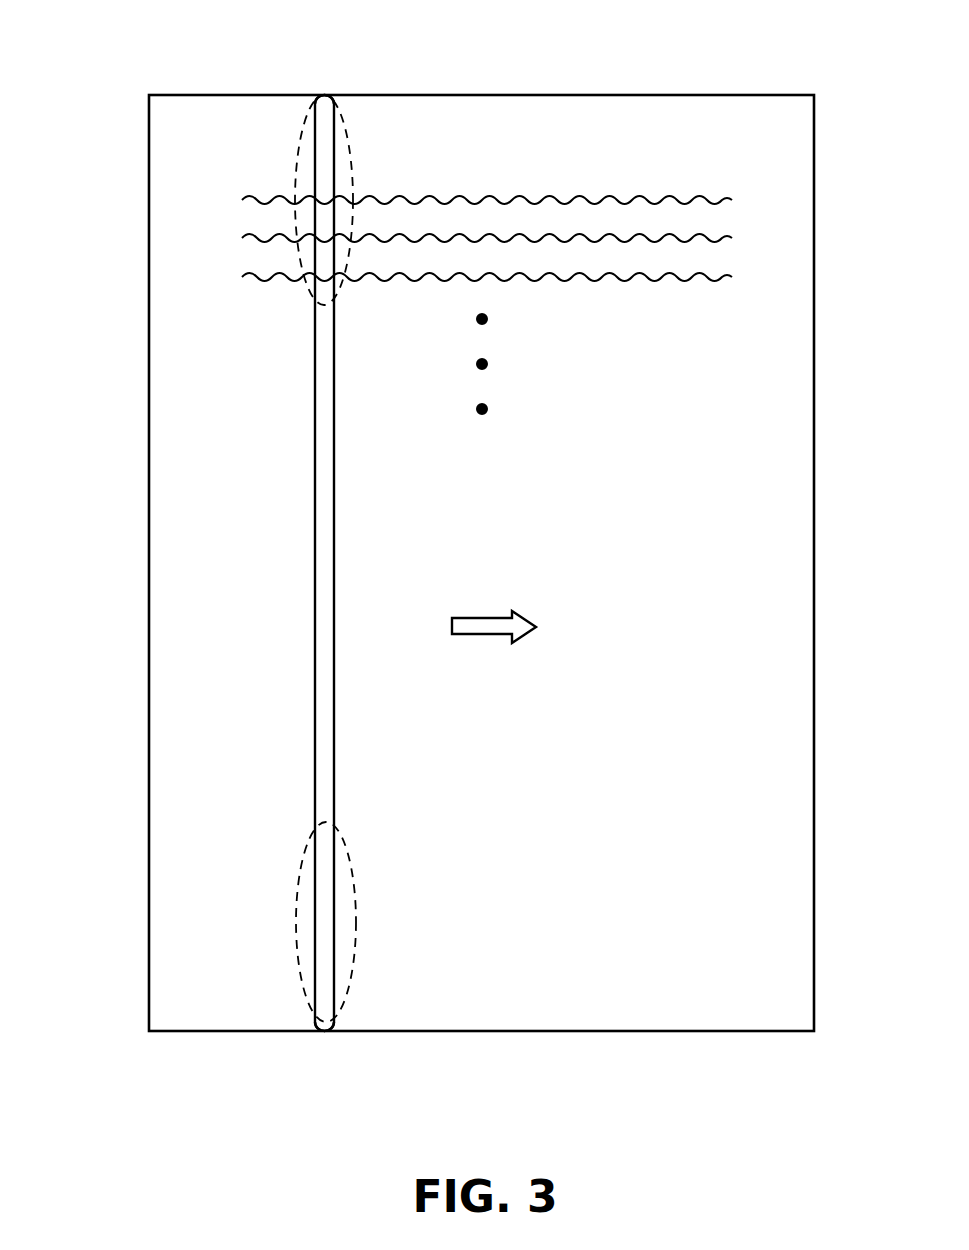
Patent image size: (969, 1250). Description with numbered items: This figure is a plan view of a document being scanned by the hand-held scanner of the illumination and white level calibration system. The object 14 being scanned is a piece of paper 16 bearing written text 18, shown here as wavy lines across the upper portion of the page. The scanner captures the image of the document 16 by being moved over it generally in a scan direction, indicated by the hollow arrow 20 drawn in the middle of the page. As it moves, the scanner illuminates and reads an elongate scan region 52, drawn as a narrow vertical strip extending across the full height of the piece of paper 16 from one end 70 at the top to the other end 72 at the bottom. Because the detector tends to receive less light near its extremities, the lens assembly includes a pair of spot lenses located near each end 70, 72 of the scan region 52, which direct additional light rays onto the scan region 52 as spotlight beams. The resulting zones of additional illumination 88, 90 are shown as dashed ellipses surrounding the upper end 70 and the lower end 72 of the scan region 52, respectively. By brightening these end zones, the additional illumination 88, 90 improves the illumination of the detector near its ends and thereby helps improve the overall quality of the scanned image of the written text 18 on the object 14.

The object 14 is at (423, 521).
The piece of paper 16 is at (648, 94).
The written text 18 is at (627, 196).
The arrow 20 is at (485, 617).
The scan region 52 is at (315, 562).
The end of scan region 70 is at (334, 145).
The end of scan region 72 is at (334, 980).
The additional illumination 88 is at (295, 160).
The additional illumination 90 is at (296, 932).